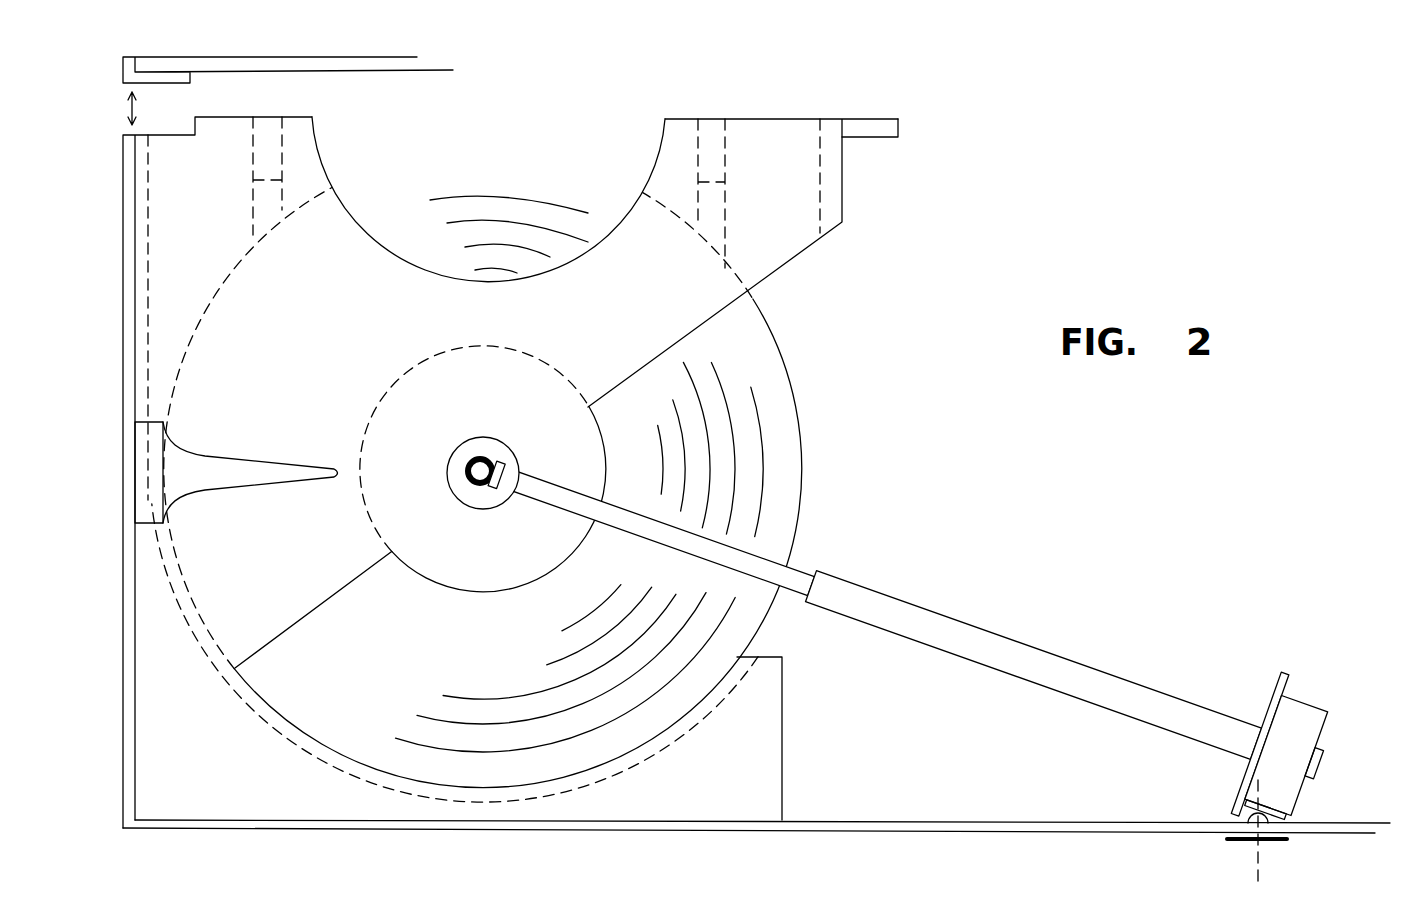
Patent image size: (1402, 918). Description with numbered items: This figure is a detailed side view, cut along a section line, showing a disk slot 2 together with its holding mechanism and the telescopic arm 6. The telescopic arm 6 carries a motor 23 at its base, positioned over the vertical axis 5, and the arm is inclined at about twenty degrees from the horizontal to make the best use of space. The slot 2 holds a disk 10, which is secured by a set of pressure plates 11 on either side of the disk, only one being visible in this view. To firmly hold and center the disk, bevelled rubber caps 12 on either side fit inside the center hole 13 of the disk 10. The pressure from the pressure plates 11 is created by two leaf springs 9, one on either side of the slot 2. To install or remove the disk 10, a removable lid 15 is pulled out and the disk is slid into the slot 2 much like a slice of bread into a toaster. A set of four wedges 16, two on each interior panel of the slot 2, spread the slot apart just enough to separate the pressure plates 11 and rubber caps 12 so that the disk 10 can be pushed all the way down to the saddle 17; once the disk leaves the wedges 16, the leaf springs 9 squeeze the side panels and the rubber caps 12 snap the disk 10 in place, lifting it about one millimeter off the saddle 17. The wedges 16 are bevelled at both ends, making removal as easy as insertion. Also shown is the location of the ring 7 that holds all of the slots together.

The slot 2 is at (825, 213).
The vertical axis 5 is at (1267, 783).
The telescopic arm 6 is at (1027, 668).
The ring 7 is at (880, 130).
The leaf spring 9 is at (223, 473).
The disk 10 is at (508, 168).
The pressure plate 11 is at (542, 388).
The bevelled rubber cap 12 is at (482, 443).
The center hole 13 is at (475, 498).
The removable lid 15 is at (420, 66).
The wedge 16 is at (267, 153).
The saddle 17 is at (782, 752).
The motor 23 is at (1293, 698).